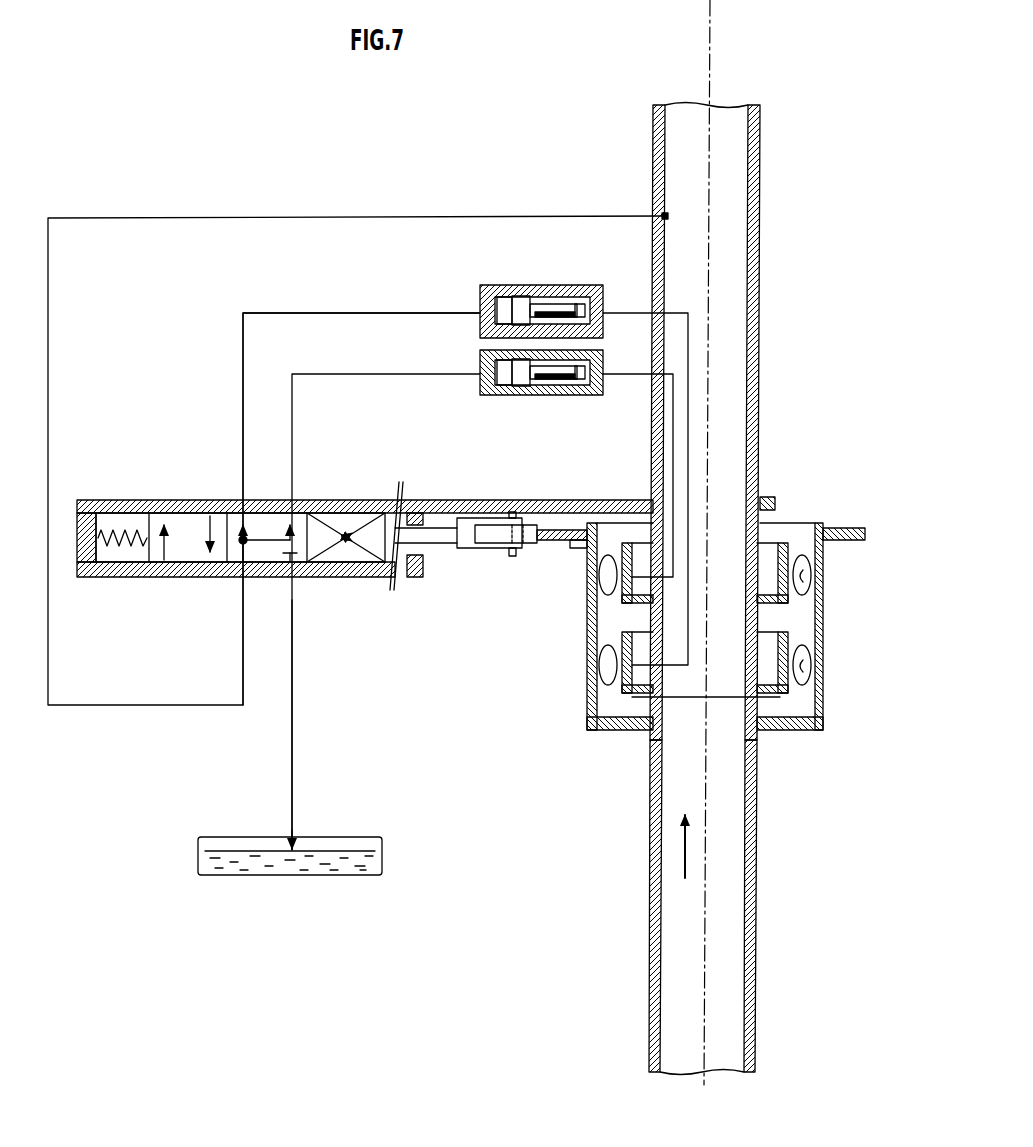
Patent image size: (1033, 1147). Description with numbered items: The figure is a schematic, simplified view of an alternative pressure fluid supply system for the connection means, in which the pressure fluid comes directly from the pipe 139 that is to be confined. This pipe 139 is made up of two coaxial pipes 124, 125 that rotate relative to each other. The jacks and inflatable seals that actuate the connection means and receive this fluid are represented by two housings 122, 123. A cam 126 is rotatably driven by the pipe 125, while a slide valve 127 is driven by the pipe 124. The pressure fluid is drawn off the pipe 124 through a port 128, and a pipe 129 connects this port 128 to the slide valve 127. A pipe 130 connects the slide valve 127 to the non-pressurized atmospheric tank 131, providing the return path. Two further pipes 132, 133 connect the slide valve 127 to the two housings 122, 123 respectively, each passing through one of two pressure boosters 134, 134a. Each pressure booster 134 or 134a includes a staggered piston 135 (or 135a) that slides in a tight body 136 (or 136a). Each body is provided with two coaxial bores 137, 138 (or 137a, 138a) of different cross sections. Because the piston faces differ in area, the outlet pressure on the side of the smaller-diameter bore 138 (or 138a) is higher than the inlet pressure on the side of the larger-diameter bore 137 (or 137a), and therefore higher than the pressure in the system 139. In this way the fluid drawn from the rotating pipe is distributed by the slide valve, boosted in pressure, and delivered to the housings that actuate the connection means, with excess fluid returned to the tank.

The housing 122 is at (820, 607).
The housing 123 is at (820, 686).
The pipe 124 is at (757, 308).
The pipe 125 is at (648, 950).
The cam 126 is at (836, 527).
The slide valve 127 is at (117, 498).
The port 128 is at (668, 214).
The pipe 129 is at (128, 217).
The pipe 130 is at (292, 742).
The non-pressurized atmospheric tank 131 is at (313, 850).
The pipe 132 is at (293, 397).
The pipe 133 is at (243, 392).
The pressure booster 134 is at (510, 278).
The pressure booster 134a is at (520, 413).
The staggered piston 135 is at (520, 299).
The staggered piston 135a is at (532, 396).
The tight body 136 is at (558, 300).
The tight body 136a is at (572, 396).
The bore 137 is at (503, 298).
The bore 137a is at (502, 396).
The bore 138 is at (582, 300).
The bore 138a is at (592, 396).
The pipe 139 is at (720, 218).